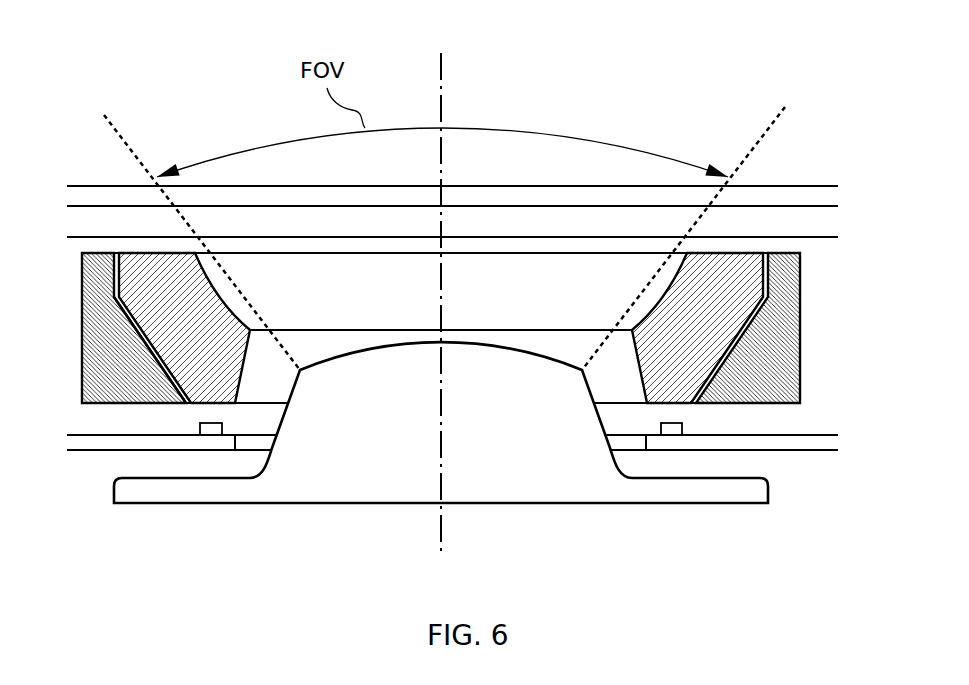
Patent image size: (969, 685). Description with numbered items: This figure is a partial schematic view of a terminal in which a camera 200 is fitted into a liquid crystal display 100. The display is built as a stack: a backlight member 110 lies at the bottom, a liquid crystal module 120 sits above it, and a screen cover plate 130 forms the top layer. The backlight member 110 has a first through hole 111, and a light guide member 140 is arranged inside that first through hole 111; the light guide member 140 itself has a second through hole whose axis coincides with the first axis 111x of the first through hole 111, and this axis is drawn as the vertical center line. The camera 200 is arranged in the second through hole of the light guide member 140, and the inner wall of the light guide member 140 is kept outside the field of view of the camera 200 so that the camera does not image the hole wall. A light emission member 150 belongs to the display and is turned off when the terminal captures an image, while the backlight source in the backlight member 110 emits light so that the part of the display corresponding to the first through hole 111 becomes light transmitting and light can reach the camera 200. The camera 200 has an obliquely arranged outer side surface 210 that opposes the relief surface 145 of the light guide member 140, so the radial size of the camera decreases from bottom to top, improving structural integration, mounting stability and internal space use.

The liquid crystal display 100 is at (175, 92).
The backlight member 110 is at (768, 377).
The first through hole 111 is at (110, 270).
The first axis 111x is at (445, 97).
The liquid crystal module 120 is at (822, 223).
The screen cover plate 130 is at (777, 193).
The light guide member 140 is at (742, 297).
The relief surface 145 is at (245, 353).
The light emission member 150 is at (205, 424).
The camera 200 is at (498, 483).
The outer side surface 210 is at (596, 408).